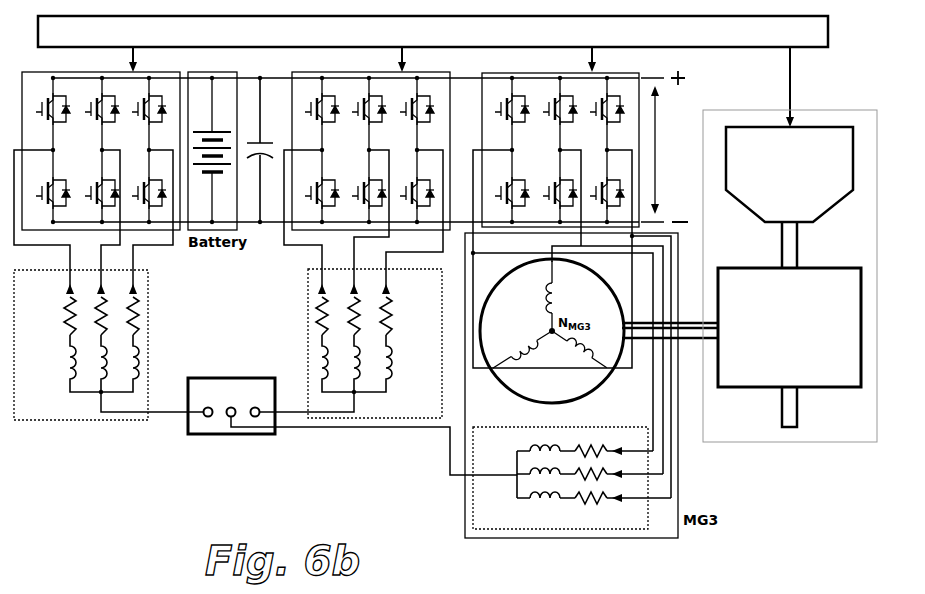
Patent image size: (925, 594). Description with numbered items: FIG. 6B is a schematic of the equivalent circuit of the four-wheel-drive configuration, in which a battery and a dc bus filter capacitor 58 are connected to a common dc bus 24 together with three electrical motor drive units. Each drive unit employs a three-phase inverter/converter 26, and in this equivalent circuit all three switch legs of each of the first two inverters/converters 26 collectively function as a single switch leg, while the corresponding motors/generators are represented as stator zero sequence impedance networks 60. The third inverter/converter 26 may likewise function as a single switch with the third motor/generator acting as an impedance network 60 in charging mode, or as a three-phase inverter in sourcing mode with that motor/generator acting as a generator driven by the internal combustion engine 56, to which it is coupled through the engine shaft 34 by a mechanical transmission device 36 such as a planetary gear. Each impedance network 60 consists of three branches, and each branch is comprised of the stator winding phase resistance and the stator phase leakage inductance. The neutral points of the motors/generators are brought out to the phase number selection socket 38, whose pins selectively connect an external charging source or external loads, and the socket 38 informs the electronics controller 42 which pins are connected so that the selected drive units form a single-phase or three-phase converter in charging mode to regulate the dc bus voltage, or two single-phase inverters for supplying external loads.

The common dc bus 24 is at (656, 153).
The inverter/converter 26 is at (100, 70).
The engine shaft 34 is at (780, 248).
The mechanical transmission device 36 is at (832, 388).
The phase number selection socket 38 is at (242, 372).
The electronics controller 42 is at (770, 43).
The internal combustion engine 56 is at (783, 147).
The filter capacitor 58 is at (267, 157).
The stator zero sequence impedance network 60 is at (103, 420).